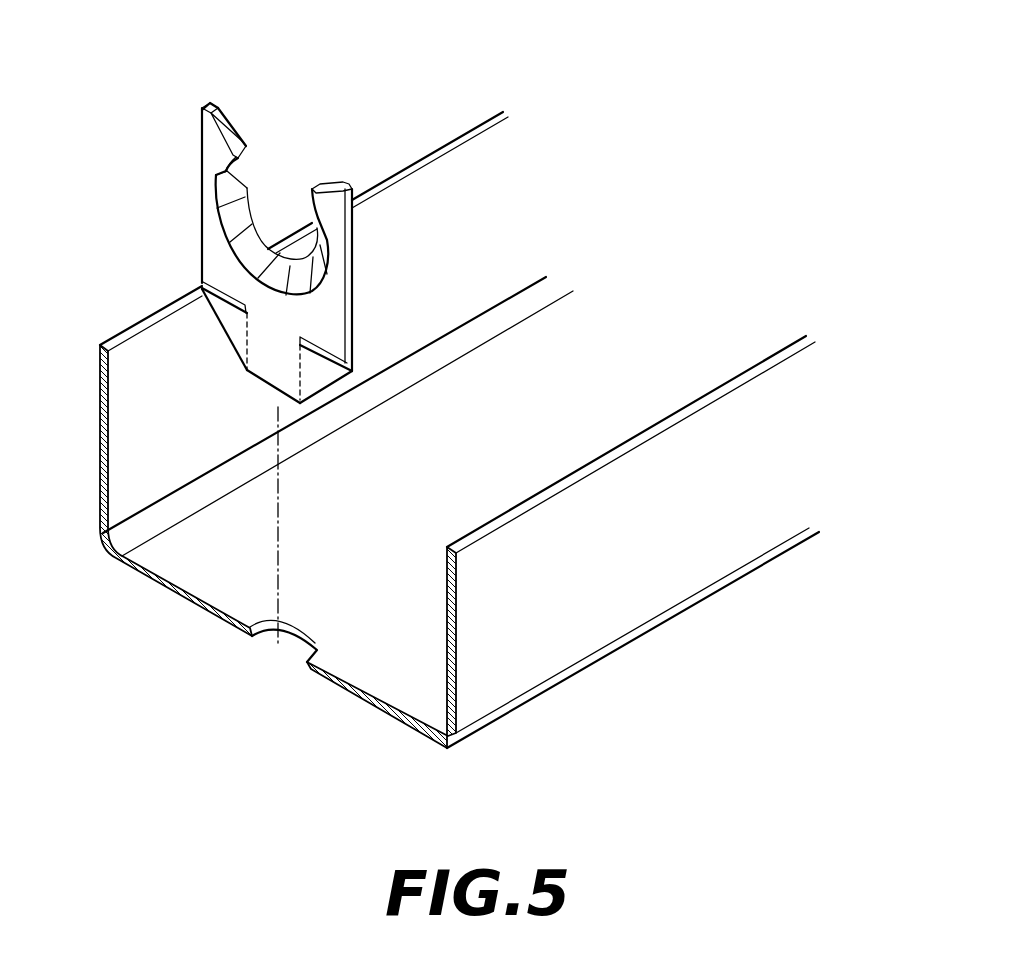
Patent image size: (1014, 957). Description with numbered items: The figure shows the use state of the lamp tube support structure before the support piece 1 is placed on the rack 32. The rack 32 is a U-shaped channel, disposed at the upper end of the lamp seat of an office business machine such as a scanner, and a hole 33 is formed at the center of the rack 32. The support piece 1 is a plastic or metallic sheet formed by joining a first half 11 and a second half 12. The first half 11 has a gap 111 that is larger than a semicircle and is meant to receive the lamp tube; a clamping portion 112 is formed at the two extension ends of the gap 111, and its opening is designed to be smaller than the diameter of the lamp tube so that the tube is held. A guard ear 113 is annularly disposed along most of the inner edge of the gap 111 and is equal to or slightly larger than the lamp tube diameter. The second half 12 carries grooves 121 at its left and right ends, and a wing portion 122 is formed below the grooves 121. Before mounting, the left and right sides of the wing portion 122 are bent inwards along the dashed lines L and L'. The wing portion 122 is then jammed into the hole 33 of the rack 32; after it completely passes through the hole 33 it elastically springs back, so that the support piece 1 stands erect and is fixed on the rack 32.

The support piece 1 is at (108, 192).
The first half 11 is at (224, 194).
The gap 111 is at (225, 170).
The clamping portion 112 is at (211, 142).
The guard ear 113 is at (233, 223).
The second half 12 is at (327, 406).
The grooves 121 is at (347, 364).
The wing portion 122 is at (275, 375).
The dashed line L is at (203, 347).
The dashed line L' is at (330, 415).
The rack 32 is at (585, 645).
The hole 33 is at (295, 632).